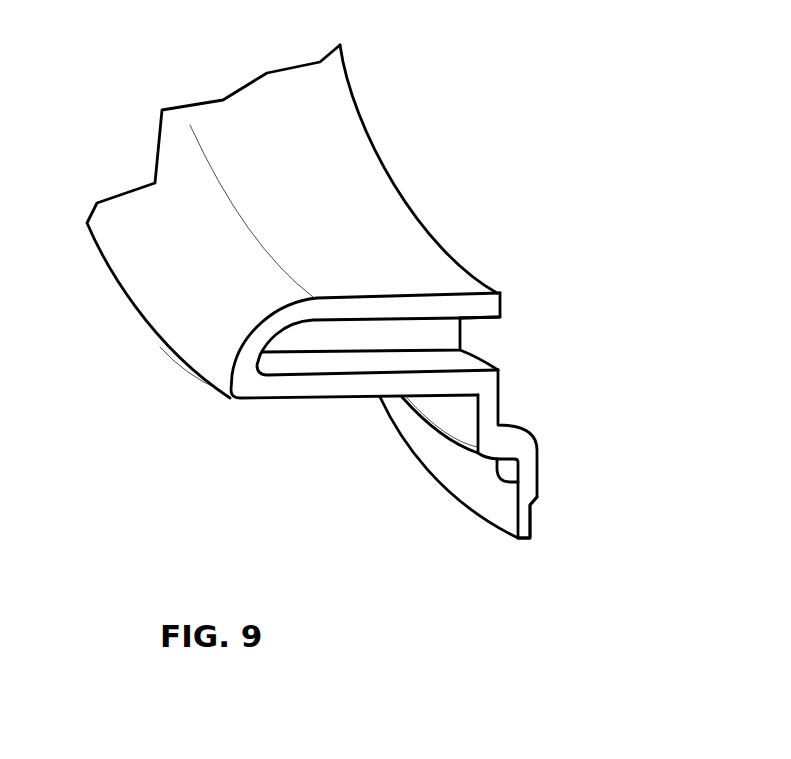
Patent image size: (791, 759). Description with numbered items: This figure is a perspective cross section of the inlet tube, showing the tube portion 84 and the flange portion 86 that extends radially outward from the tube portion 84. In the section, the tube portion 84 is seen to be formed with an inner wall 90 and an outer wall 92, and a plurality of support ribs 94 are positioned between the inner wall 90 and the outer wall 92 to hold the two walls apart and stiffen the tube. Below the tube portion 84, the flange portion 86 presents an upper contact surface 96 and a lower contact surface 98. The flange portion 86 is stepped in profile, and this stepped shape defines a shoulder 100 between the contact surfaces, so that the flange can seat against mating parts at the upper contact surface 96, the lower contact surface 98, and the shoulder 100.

The tube portion 84 is at (422, 167).
The flange portion 86 is at (406, 545).
The inner wall 90 is at (423, 268).
The outer wall 92 is at (315, 398).
The support ribs 94 is at (443, 330).
The upper contact surface 96 is at (497, 508).
The lower contact surface 98 is at (530, 517).
The shoulder 100 is at (518, 482).